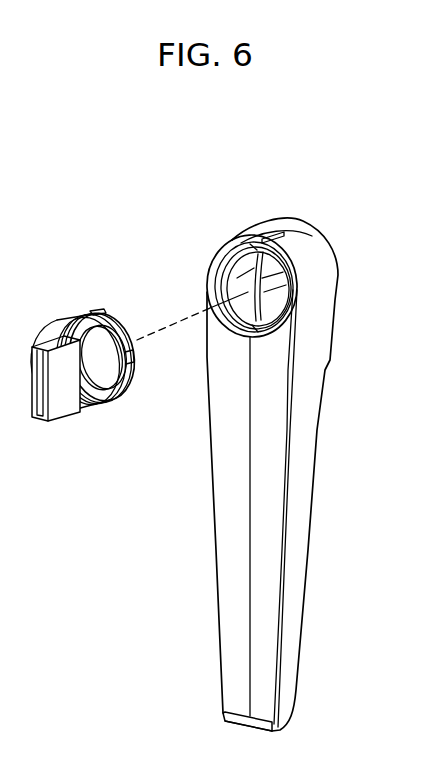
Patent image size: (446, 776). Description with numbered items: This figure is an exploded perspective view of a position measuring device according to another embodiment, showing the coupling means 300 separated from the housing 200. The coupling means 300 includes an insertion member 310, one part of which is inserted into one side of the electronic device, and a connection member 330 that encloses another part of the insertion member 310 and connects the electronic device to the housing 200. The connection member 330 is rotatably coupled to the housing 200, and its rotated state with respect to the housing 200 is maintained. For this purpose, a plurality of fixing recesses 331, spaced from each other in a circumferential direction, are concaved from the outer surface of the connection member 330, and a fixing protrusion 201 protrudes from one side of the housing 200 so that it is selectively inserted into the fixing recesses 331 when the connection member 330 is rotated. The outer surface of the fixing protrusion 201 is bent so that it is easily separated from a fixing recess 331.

The housing 200 is at (305, 474).
The fixing protrusion 201 is at (284, 236).
The coupling means 300 is at (120, 395).
The insertion member 310 is at (58, 397).
The connection member 330 is at (91, 382).
The fixing recess 331 is at (90, 313).